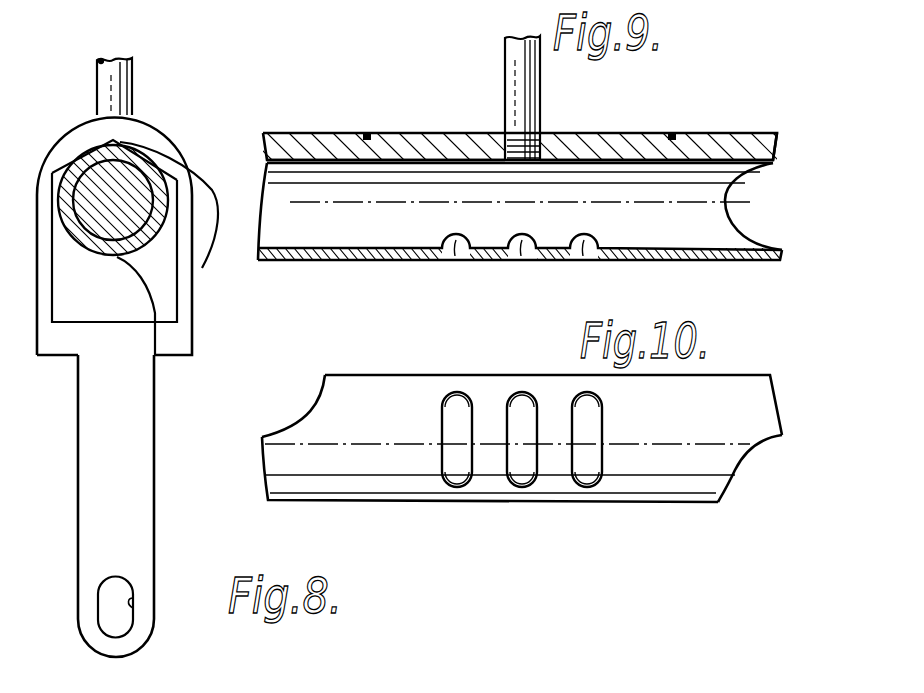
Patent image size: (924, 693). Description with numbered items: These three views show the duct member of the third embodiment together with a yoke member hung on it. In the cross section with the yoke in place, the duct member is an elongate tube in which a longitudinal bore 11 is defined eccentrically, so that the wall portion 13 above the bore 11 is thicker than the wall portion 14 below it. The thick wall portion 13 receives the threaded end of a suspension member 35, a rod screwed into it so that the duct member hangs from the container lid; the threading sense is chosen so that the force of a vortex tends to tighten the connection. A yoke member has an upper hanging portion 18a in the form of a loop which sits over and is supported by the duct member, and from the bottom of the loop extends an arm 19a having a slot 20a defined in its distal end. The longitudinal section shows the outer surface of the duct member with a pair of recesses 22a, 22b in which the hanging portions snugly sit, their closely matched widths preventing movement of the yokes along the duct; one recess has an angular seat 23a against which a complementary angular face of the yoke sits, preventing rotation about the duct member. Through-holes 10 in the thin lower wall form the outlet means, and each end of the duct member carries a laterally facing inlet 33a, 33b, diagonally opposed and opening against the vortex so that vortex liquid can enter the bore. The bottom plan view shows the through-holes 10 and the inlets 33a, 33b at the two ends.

In FIG. 9, the through-holes 10 is at (583, 252).
In FIG. 8, the longitudinal bore 11 is at (128, 212).
In FIG. 8, the wall portion above the bore 13 is at (107, 130).
In FIG. 8, the wall portion below the bore 14 is at (156, 358).
In FIG. 8, the hanging portion 18a is at (128, 135).
In FIG. 8, the arm 19a is at (136, 497).
In FIG. 8, the slot 20a is at (131, 600).
In FIG. 9, the recess 22a is at (367, 134).
In FIG. 9, the recess 22b is at (672, 134).
In FIG. 8, the angular seat 23a is at (180, 220).
In FIG. 10, the inlet 33a is at (313, 421).
In FIG. 9, the inlet 33b is at (727, 199).
In FIG. 10, the inlet 33b is at (742, 454).
In FIG. 8, the suspension member 35 is at (125, 56).